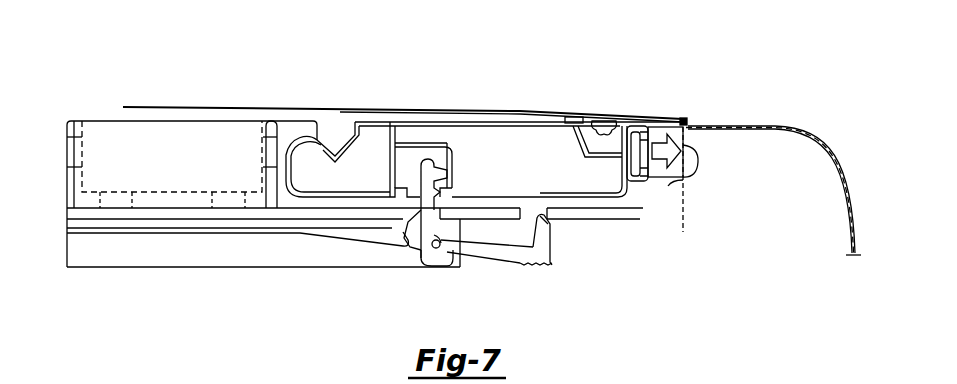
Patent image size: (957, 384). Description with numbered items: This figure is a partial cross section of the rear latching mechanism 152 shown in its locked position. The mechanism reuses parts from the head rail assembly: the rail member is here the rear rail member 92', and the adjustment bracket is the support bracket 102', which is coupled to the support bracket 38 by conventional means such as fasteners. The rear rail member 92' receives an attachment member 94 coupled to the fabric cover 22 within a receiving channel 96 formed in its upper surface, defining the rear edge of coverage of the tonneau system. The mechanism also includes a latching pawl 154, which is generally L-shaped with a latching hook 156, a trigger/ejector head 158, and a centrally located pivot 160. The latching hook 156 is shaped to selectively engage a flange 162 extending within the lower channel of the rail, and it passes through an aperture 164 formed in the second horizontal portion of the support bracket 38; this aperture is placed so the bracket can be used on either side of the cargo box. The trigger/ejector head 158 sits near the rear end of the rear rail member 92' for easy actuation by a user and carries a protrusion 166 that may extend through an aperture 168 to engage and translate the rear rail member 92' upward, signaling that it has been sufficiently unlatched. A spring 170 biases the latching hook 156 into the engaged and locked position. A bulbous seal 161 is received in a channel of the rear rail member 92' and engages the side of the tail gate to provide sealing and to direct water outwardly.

The fabric cover 22 is at (343, 106).
The support bracket 38 is at (76, 207).
The rear rail member 92' is at (484, 125).
The attachment member 94 is at (608, 118).
The receiving channel 96 is at (582, 118).
The support bracket 102' is at (172, 124).
The rear latching mechanism 152 is at (427, 292).
The latching pawl 154 is at (511, 258).
The latching hook 156 is at (433, 170).
The trigger/ejector head 158 is at (554, 258).
The pivot 160 is at (444, 268).
The bulbous seal 161 is at (683, 191).
The flange 162 is at (452, 195).
The aperture 164 is at (403, 242).
The protrusion 166 is at (547, 233).
The aperture 168 is at (541, 210).
The spring 170 is at (273, 237).